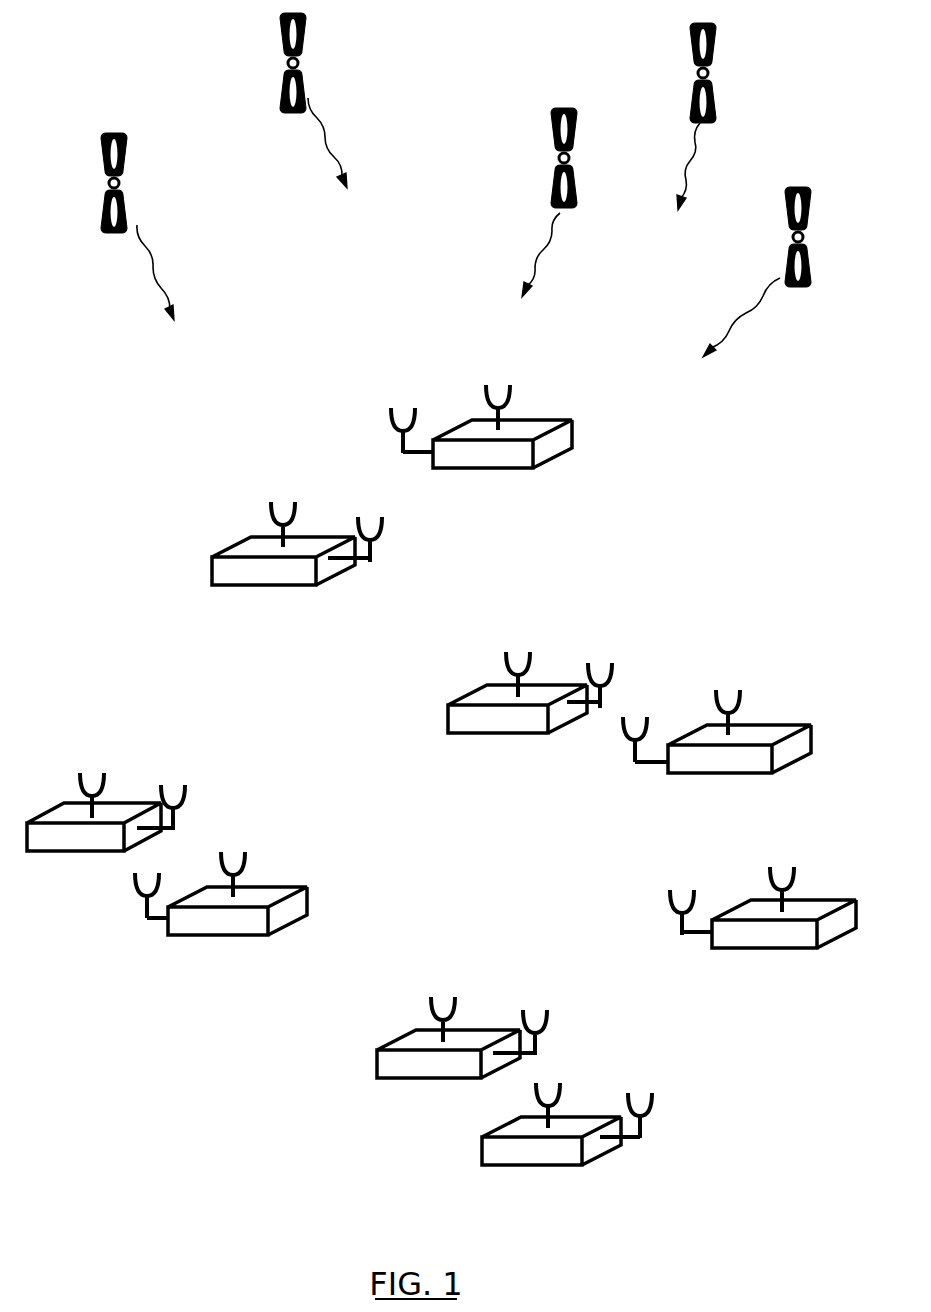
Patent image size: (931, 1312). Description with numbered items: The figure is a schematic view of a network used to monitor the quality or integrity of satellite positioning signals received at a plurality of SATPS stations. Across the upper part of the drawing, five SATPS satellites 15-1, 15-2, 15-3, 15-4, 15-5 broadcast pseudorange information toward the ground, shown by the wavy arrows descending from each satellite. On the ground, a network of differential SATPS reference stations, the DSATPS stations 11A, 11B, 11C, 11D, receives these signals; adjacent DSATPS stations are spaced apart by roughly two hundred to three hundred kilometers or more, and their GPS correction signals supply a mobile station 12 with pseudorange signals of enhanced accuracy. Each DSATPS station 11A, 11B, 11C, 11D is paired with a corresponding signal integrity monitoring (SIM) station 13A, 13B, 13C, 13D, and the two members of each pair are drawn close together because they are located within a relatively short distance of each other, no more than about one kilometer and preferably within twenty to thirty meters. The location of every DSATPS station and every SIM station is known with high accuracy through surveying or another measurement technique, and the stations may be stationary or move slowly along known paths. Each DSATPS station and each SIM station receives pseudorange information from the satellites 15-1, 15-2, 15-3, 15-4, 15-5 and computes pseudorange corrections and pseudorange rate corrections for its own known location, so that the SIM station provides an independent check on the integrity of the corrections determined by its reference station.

The SATPS satellite 15-1 is at (121, 181).
The SATPS satellite 15-2 is at (300, 61).
The SATPS satellite 15-3 is at (557, 160).
The SATPS satellite 15-4 is at (710, 71).
The SATPS satellite 15-5 is at (791, 238).
The DSATPS station 11A is at (87, 847).
The DSATPS station 11B is at (282, 580).
The DSATPS station 11C is at (757, 765).
The DSATPS station 11D is at (460, 1072).
The SIM station 13A is at (248, 923).
The SIM station 13B is at (517, 458).
The SIM station 13C is at (528, 723).
The SIM station 13D is at (557, 1153).
The mobile station 12 is at (768, 948).